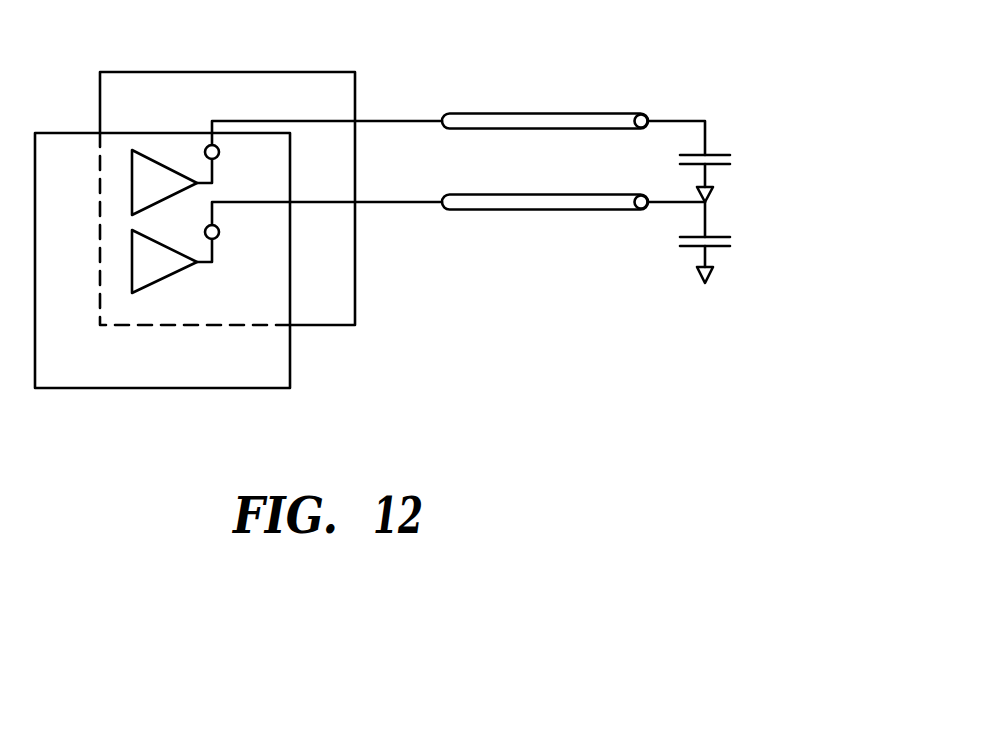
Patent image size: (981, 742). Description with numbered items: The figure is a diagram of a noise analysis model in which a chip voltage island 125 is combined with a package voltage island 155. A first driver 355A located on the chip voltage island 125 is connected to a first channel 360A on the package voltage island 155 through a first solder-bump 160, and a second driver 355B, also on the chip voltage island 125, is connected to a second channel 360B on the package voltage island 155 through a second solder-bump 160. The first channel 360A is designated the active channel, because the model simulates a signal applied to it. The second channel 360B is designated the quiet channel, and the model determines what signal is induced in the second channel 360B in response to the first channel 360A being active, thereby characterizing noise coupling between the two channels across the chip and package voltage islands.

The chip voltage island 125 is at (250, 72).
The package voltage island 155 is at (65, 388).
The solder-bump 160 is at (219, 152).
The first driver 355A is at (157, 173).
The second driver 355B is at (157, 273).
The first channel 360A is at (623, 114).
The second channel 360B is at (622, 212).